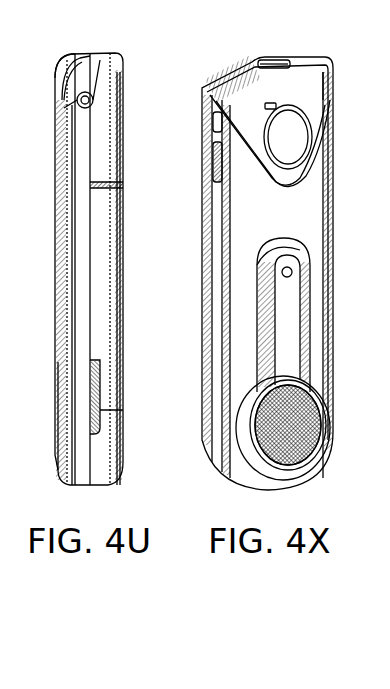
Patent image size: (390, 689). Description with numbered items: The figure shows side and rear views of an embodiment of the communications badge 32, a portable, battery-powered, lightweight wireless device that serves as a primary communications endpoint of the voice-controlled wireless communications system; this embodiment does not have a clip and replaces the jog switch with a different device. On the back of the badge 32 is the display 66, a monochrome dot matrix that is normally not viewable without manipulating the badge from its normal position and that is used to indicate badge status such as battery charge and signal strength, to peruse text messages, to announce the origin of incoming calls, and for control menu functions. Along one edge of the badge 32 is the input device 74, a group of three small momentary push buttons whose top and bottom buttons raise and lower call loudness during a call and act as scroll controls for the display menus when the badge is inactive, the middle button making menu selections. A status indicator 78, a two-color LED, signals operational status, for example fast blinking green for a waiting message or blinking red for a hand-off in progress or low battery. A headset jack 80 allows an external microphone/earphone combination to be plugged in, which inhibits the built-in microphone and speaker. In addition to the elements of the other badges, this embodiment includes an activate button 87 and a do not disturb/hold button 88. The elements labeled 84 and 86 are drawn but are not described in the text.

In FIG. 4U, the badge device 32 is at (123, 60).
In FIG. 4X, the badge device 32 is at (333, 75).
In FIG. 4X, the display 66 is at (356, 119).
In FIG. 4X, the input device 74 is at (205, 168).
In FIG. 4X, the status indicator 78 is at (320, 62).
In FIG. 4U, the headset jack 80 is at (70, 101).
In FIG. 4X, the switch 84 is at (264, 105).
In FIG. 4U, the speaker cover 86 is at (123, 143).
In FIG. 4X, the speaker cover 86 is at (325, 440).
In FIG. 4X, the activate button 87 is at (288, 137).
In FIG. 4U, the do not disturb/hold button 88 is at (92, 52).
In FIG. 4X, the do not disturb/hold button 88 is at (285, 62).